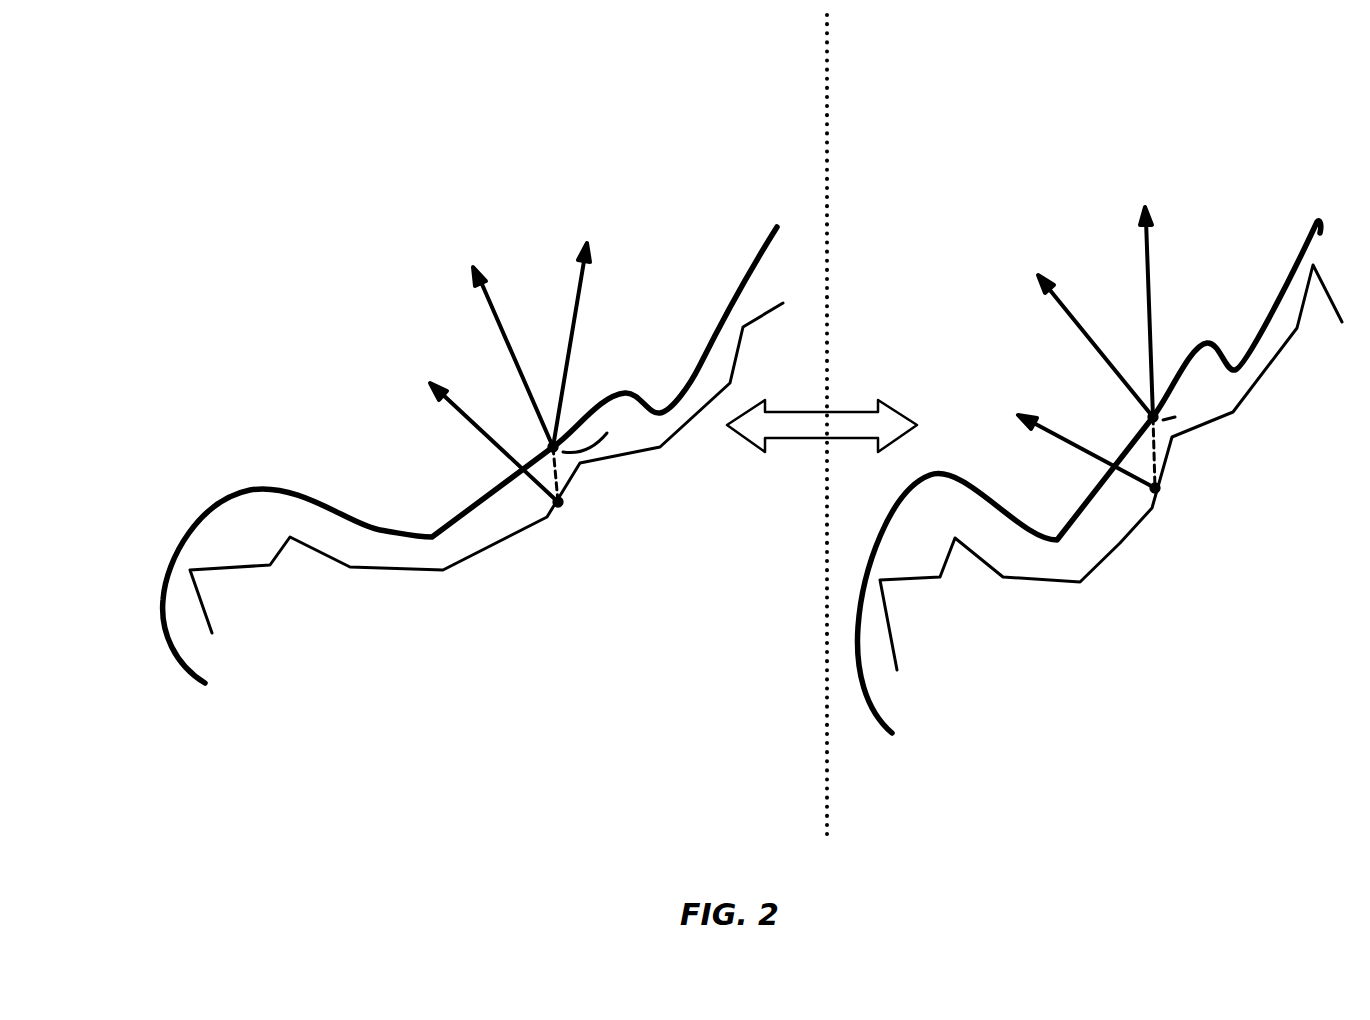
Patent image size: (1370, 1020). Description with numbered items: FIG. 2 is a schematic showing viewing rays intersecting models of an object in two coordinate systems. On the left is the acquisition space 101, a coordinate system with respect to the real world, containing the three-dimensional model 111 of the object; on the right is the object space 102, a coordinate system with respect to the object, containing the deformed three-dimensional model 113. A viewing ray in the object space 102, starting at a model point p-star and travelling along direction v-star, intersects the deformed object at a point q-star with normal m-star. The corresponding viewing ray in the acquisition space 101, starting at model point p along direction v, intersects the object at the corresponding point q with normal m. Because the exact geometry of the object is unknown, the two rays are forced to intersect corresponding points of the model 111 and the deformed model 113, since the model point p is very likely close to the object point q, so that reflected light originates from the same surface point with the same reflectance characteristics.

The acquisition space 101 is at (473, 474).
The object space 102 is at (1026, 464).
The 3D model 111 is at (427, 540).
The deformed 3D model 113 is at (860, 673).